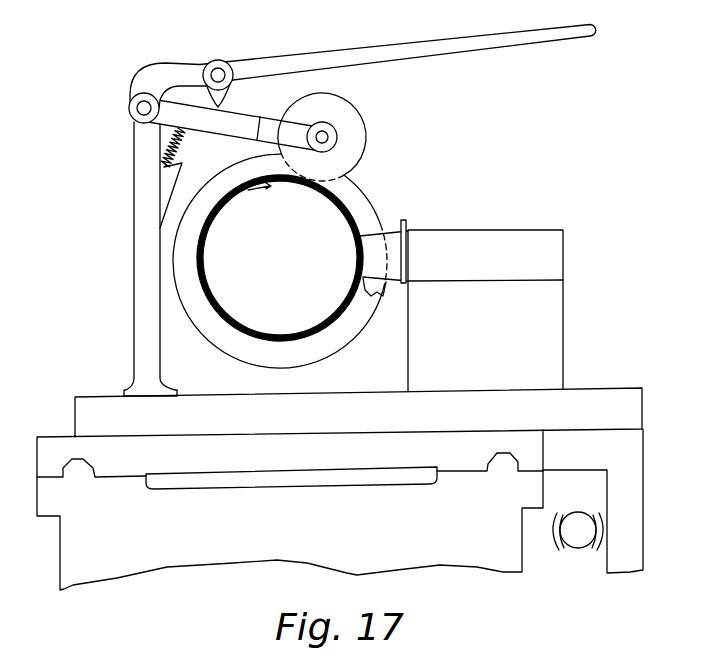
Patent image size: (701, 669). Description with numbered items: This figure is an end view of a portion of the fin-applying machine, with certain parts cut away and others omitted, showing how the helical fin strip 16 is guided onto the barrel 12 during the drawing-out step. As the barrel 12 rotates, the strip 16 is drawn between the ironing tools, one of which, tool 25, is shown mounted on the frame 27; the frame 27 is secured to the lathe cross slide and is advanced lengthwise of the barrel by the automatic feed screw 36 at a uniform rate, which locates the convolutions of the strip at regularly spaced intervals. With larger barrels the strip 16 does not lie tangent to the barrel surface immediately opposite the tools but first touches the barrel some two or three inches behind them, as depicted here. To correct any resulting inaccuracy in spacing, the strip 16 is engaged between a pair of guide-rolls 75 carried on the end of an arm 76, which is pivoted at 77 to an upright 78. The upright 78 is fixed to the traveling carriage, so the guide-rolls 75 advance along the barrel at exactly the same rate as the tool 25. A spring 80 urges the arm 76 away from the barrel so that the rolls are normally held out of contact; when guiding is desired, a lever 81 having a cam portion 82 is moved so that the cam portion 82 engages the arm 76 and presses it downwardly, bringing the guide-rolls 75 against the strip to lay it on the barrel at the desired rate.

The barrel 12 is at (227, 310).
The strip 16 is at (245, 348).
The tool 25 is at (392, 231).
The frame 27 is at (490, 230).
The automatic feed screw 36 is at (590, 540).
The guide-rolls 75 is at (358, 127).
The arm 76 is at (195, 110).
The pivot 77 is at (144, 108).
The upright 78 is at (143, 295).
The spring 80 is at (178, 158).
The lever 81 is at (469, 48).
The cam portion 82 is at (230, 100).